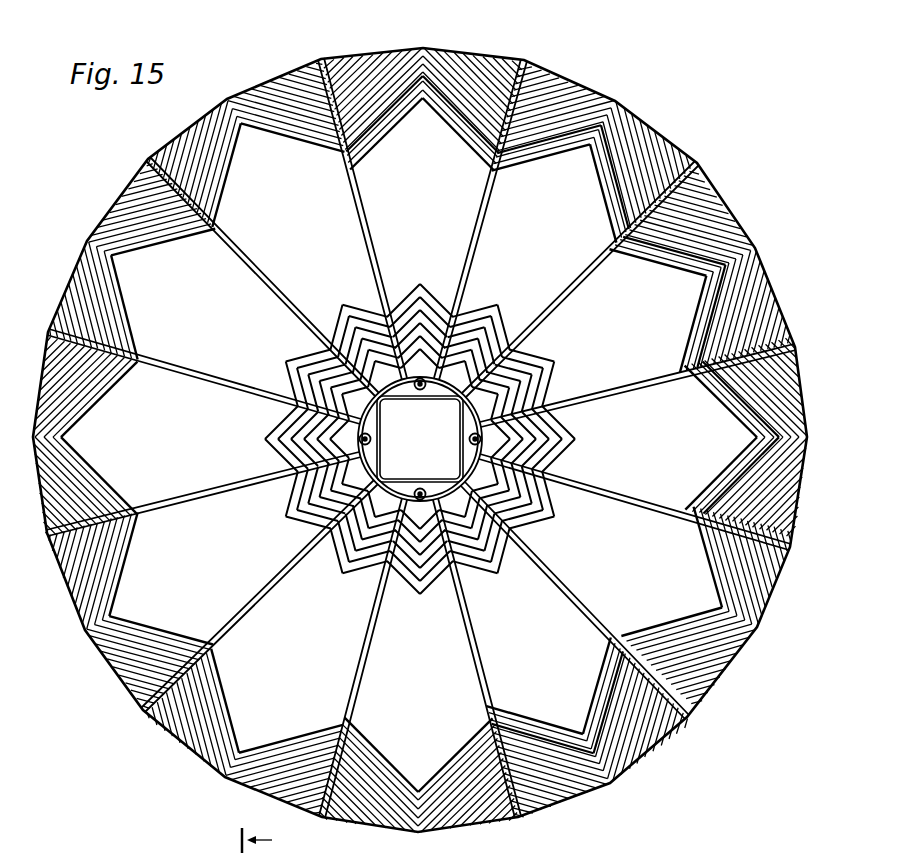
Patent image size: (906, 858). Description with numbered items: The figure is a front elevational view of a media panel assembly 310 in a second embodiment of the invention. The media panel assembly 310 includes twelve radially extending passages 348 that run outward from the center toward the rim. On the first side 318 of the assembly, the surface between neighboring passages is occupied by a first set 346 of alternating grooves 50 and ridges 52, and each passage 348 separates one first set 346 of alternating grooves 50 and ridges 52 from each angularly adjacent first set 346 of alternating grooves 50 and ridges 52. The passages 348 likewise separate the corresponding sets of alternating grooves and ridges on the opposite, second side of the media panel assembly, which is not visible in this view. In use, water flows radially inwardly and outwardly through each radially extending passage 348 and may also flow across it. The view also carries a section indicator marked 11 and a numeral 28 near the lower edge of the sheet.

The media panel assembly 310 is at (668, 121).
The first side 318 is at (612, 98).
The first set of alternating grooves and ridges 346 is at (373, 74).
The radially extending passage 348 is at (509, 61).
The groove 50 is at (465, 62).
The ridge 52 is at (458, 64).
The section line 11- 11 is at (273, 840).
The frame member 28 is at (688, 846).